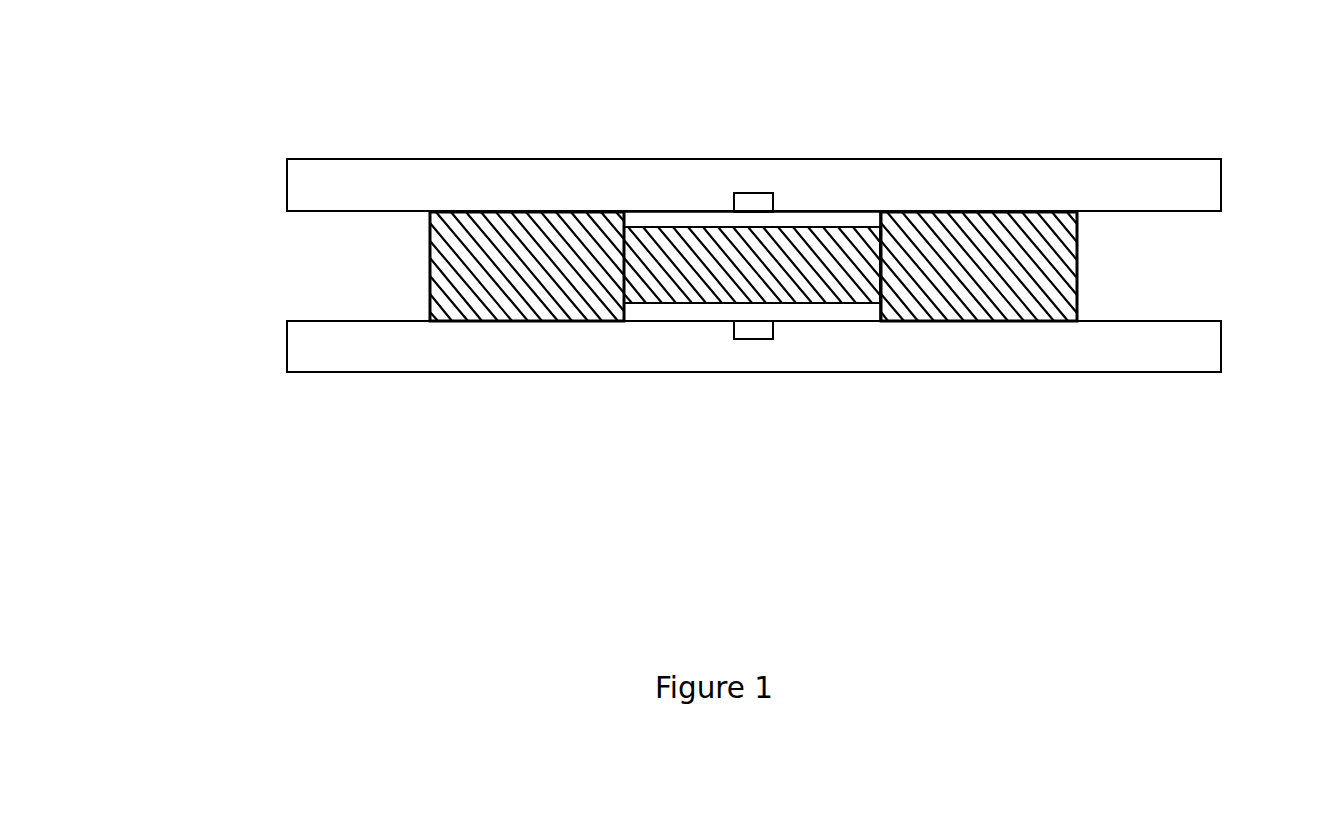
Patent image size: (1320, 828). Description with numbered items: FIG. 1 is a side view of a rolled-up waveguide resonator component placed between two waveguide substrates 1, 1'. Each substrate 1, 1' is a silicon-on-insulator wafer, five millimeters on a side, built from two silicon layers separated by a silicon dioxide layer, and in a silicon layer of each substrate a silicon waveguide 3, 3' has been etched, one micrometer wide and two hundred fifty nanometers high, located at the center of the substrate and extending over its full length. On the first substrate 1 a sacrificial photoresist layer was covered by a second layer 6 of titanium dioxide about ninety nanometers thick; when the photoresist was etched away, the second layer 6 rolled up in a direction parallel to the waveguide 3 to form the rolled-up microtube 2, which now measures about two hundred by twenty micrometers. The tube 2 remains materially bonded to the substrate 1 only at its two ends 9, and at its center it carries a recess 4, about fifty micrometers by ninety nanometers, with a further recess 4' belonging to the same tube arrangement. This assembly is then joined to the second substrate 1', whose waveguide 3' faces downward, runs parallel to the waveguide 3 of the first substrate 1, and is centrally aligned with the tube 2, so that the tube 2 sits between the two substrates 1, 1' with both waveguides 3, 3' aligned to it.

The substrate 1 is at (754, 406).
The substrate 1' is at (754, 128).
The rolled-up microtube 2 is at (983, 267).
The waveguide 3 is at (796, 407).
The waveguide 3' is at (797, 129).
The recess 4 is at (789, 397).
The recess 4' is at (793, 136).
The second layer 6 is at (392, 253).
The end of tube 9 is at (518, 321).